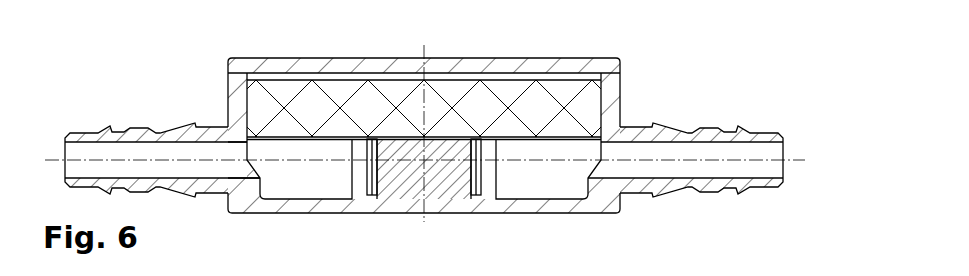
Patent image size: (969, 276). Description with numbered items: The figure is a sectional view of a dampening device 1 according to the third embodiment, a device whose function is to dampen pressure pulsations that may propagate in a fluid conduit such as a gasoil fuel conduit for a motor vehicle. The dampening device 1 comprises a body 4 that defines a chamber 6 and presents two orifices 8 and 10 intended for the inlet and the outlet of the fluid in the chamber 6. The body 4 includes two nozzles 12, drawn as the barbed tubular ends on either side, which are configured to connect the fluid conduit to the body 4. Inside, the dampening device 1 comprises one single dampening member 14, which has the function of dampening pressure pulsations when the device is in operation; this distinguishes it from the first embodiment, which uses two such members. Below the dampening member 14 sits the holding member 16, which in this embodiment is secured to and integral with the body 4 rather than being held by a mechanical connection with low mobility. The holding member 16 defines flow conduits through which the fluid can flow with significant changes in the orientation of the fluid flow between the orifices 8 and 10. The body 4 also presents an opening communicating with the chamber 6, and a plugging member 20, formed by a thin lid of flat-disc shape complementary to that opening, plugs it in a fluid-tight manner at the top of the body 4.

The dampening device 1 is at (738, 110).
The body 4 is at (612, 201).
The chamber 6 is at (308, 172).
The orifice 8 is at (247, 163).
The orifice 10 is at (607, 172).
The nozzle 12 is at (169, 137).
The dampening member 14 is at (592, 105).
The holding member 16 is at (447, 167).
The plugging member 20 is at (541, 72).